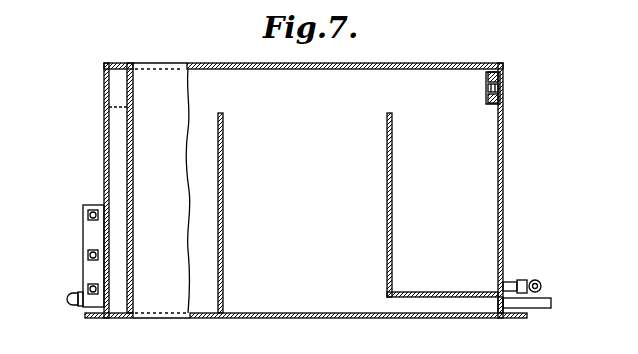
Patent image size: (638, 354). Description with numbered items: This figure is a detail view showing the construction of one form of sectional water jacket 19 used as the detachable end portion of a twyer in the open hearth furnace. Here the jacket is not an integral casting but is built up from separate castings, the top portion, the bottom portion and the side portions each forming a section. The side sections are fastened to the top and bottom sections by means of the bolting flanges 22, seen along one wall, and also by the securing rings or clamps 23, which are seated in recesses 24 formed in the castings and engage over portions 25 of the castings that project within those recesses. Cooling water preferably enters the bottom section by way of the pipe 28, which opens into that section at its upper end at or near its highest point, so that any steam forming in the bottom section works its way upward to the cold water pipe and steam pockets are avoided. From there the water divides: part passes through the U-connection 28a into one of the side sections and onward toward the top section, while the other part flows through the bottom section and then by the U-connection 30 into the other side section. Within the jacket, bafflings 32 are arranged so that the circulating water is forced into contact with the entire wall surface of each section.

The water jacket 19 is at (102, 142).
The bolting flanges 22 is at (87, 239).
The securing rings or clamps 23 is at (502, 76).
The recesses 24 is at (498, 105).
The projecting portions 25 is at (500, 91).
The pipe 28 is at (552, 302).
The U-connection 28a is at (545, 286).
The U-connection 30 is at (70, 298).
The bafflings 32 is at (224, 187).